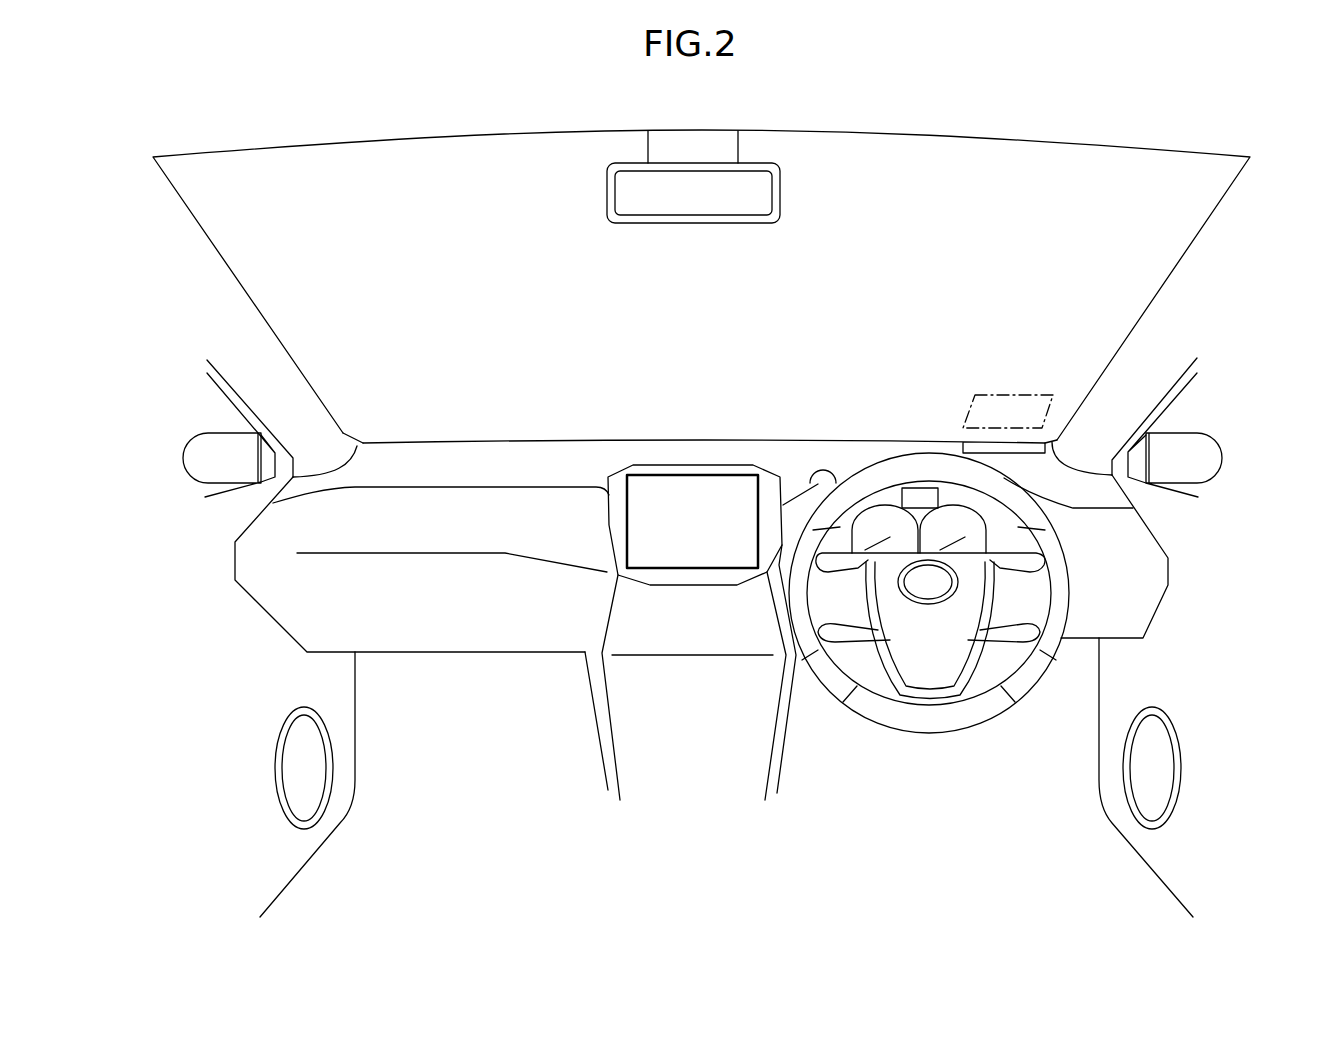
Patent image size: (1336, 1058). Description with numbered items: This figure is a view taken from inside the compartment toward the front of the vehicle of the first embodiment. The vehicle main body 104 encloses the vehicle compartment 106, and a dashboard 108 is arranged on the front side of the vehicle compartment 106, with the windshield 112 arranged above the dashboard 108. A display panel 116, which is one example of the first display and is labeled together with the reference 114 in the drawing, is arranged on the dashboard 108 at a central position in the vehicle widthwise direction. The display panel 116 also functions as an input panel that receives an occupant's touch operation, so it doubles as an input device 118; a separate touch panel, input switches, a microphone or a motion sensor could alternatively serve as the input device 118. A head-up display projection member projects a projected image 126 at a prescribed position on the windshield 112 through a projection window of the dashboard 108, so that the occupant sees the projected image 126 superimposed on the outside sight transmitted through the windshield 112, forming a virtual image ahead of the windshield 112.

The vehicle main body 104 is at (239, 650).
The vehicle compartment 106 is at (549, 801).
The dashboard 108 is at (528, 463).
The windshield 112 is at (435, 157).
The display device 114 is at (704, 474).
The display panel 116 is at (704, 474).
The input device 118 is at (712, 487).
The projected image 126 is at (998, 393).